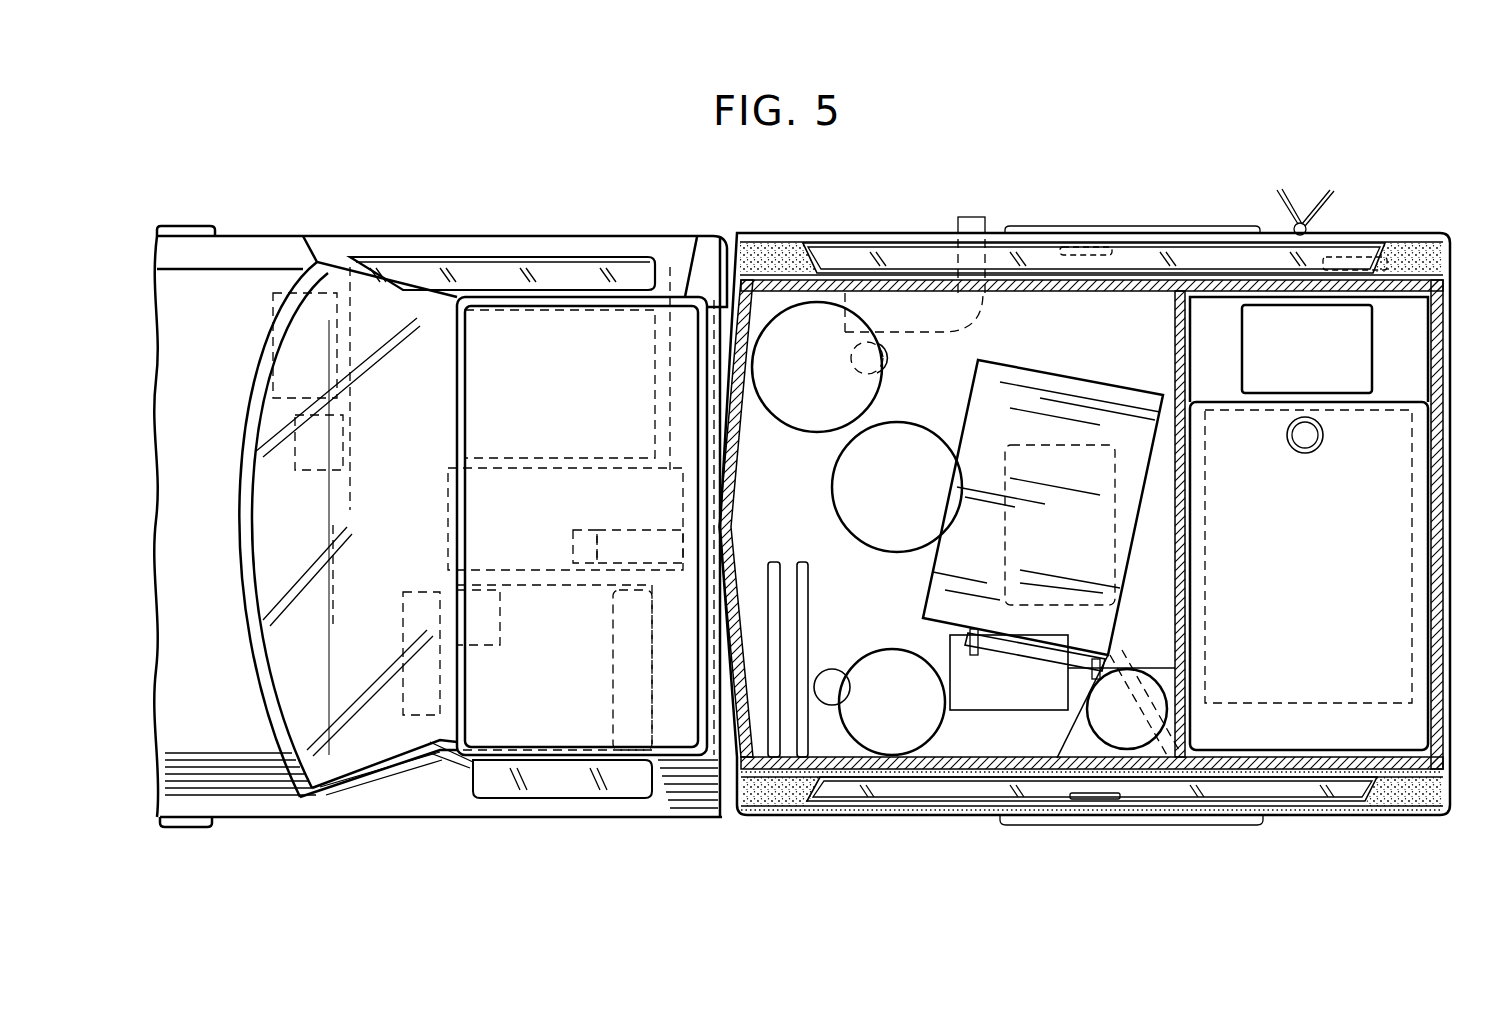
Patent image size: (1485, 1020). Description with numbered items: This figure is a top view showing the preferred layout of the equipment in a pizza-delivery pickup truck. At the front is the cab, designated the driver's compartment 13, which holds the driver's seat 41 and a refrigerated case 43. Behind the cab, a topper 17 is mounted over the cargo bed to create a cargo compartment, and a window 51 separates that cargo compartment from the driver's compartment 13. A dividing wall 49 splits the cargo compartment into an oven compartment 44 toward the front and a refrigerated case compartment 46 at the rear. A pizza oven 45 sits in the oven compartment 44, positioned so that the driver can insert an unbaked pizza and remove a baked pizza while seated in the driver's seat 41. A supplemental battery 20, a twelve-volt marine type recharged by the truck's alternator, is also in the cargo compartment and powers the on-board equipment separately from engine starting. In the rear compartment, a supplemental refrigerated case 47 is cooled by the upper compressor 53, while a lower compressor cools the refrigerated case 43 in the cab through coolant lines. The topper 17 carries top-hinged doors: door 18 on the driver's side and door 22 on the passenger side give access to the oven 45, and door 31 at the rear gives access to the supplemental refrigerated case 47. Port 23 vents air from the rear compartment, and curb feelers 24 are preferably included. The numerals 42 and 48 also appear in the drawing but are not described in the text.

The driver's compartment 13 is at (532, 533).
The topper 17 is at (1420, 792).
The door 18 is at (1312, 785).
The supplemental battery 20 is at (997, 697).
The door 22 is at (1070, 260).
The port 23 is at (1323, 437).
The curb feelers 24 is at (1316, 200).
The door 31 is at (1430, 628).
The driver's seat 41 is at (537, 772).
The front compartment 42 is at (804, 527).
The refrigerated case 43 is at (527, 333).
The oven compartment 44 is at (894, 619).
The pizza oven 45 is at (1060, 385).
The refrigerated case compartment 46 is at (1338, 569).
The supplemental refrigerated case 47 is at (1343, 692).
The cylindrical tank 48 is at (800, 333).
The dividing wall 49 is at (1180, 712).
The window 51 is at (702, 597).
The compressor 53 is at (1263, 318).